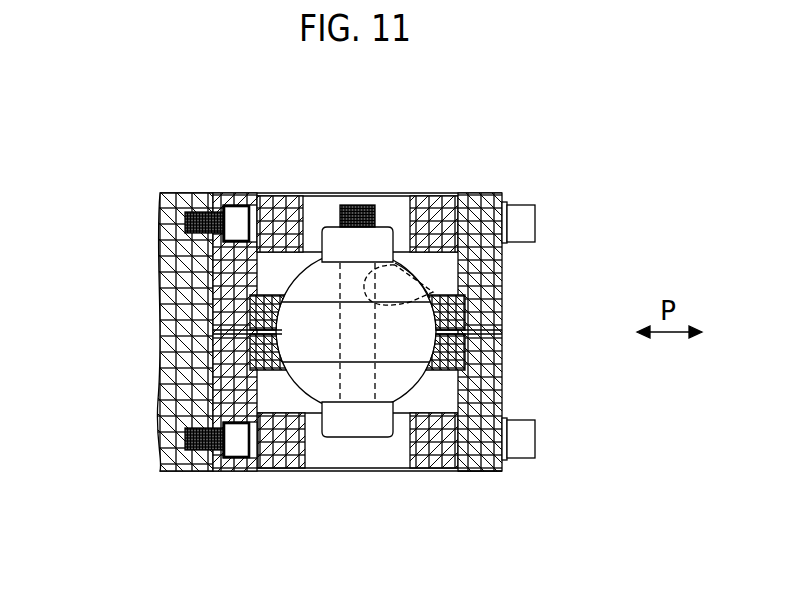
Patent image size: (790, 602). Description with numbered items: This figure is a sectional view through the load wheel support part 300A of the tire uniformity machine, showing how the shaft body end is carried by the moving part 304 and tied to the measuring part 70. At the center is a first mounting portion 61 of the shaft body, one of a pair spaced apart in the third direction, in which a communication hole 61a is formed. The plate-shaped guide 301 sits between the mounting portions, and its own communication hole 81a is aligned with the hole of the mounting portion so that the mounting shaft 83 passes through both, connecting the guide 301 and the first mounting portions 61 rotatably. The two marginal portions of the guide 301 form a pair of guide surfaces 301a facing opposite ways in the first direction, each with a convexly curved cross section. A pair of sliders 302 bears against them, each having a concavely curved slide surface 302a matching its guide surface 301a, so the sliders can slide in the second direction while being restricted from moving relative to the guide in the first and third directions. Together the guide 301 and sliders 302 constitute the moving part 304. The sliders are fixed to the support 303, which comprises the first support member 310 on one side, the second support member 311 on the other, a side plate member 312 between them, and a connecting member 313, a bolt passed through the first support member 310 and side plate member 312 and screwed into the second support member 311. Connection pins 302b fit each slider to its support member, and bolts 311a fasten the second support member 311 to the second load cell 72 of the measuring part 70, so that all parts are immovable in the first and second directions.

The load wheel support part 300A is at (203, 180).
The second load cell 72 is at (180, 468).
The measuring part 70 is at (154, 386).
The second support member 311 is at (240, 197).
The bolt 311a is at (226, 203).
The moving part 304 is at (442, 331).
The guide 301 is at (308, 273).
The guide surface 301a is at (268, 290).
The slider 302 is at (455, 359).
The slide surface 302a is at (440, 322).
The connection pin 302b is at (487, 328).
The side plate member 312 is at (437, 197).
The first support member 310 is at (482, 200).
The support 303 is at (478, 463).
The connecting member 313 is at (528, 215).
The first mounting portion 61 is at (317, 320).
The communication hole 61a is at (402, 265).
The communication hole 81a is at (433, 292).
The mounting shaft 83 is at (352, 380).